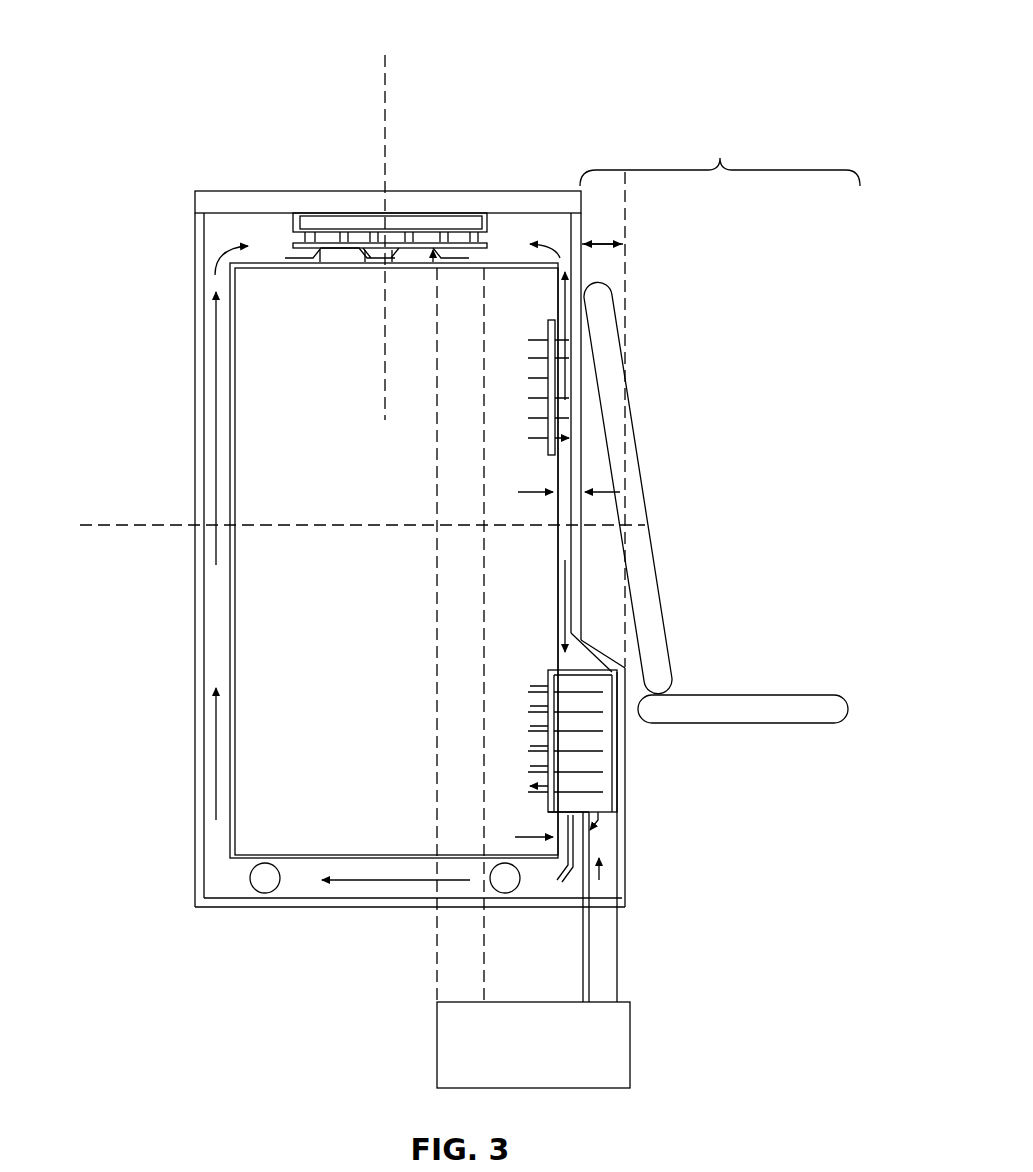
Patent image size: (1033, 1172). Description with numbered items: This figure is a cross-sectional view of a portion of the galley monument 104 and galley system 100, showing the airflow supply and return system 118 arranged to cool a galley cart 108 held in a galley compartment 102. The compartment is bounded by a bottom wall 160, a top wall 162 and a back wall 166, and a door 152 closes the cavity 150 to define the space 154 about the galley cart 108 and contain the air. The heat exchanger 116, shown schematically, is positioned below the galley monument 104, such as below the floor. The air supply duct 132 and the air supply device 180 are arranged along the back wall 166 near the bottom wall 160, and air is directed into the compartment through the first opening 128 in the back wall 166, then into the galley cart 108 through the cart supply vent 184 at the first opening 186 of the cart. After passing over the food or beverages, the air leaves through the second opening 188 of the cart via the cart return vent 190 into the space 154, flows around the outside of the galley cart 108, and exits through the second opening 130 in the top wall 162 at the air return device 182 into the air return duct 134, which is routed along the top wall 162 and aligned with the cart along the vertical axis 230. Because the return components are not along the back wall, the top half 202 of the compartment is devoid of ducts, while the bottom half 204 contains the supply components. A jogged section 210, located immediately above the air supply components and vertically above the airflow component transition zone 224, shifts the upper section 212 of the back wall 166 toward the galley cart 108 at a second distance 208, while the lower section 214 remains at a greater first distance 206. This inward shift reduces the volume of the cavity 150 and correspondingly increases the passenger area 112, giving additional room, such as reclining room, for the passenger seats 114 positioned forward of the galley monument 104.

The galley system 100 is at (582, 45).
The galley compartment 102 is at (203, 188).
The galley monument 104 is at (236, 95).
The galley cart 108 is at (245, 372).
The passenger area 112 is at (470, 396).
The passenger seats 114 is at (640, 575).
The heat exchanger 116 is at (610, 1045).
The airflow supply and return system 118 is at (618, 930).
The first opening 128 is at (545, 683).
The second opening 130 is at (420, 226).
The air supply duct 132 is at (610, 915).
The air return duct 134 is at (456, 956).
The cavity 150 is at (210, 856).
The door 152 is at (196, 695).
The space 154 is at (262, 238).
The bottom wall 160 is at (336, 910).
The top wall 162 is at (516, 200).
The back wall 166 is at (600, 525).
The air supply device 180 is at (553, 818).
The air return device 182 is at (378, 256).
The cart supply vent 184 is at (540, 792).
The first opening of the galley cart 186 is at (556, 778).
The second opening of the galley cart 188 is at (565, 375).
The cart return vent 190 is at (552, 392).
The top half 202 is at (265, 487).
The bottom half 204 is at (268, 560).
The first distance 206 is at (628, 833).
The second distance 208 is at (533, 492).
The jogged section 210 is at (608, 660).
The upper section 212 is at (583, 402).
The lower section 214 is at (628, 735).
The airflow component transition zone 224 is at (578, 878).
The vertical axis 230 is at (395, 92).